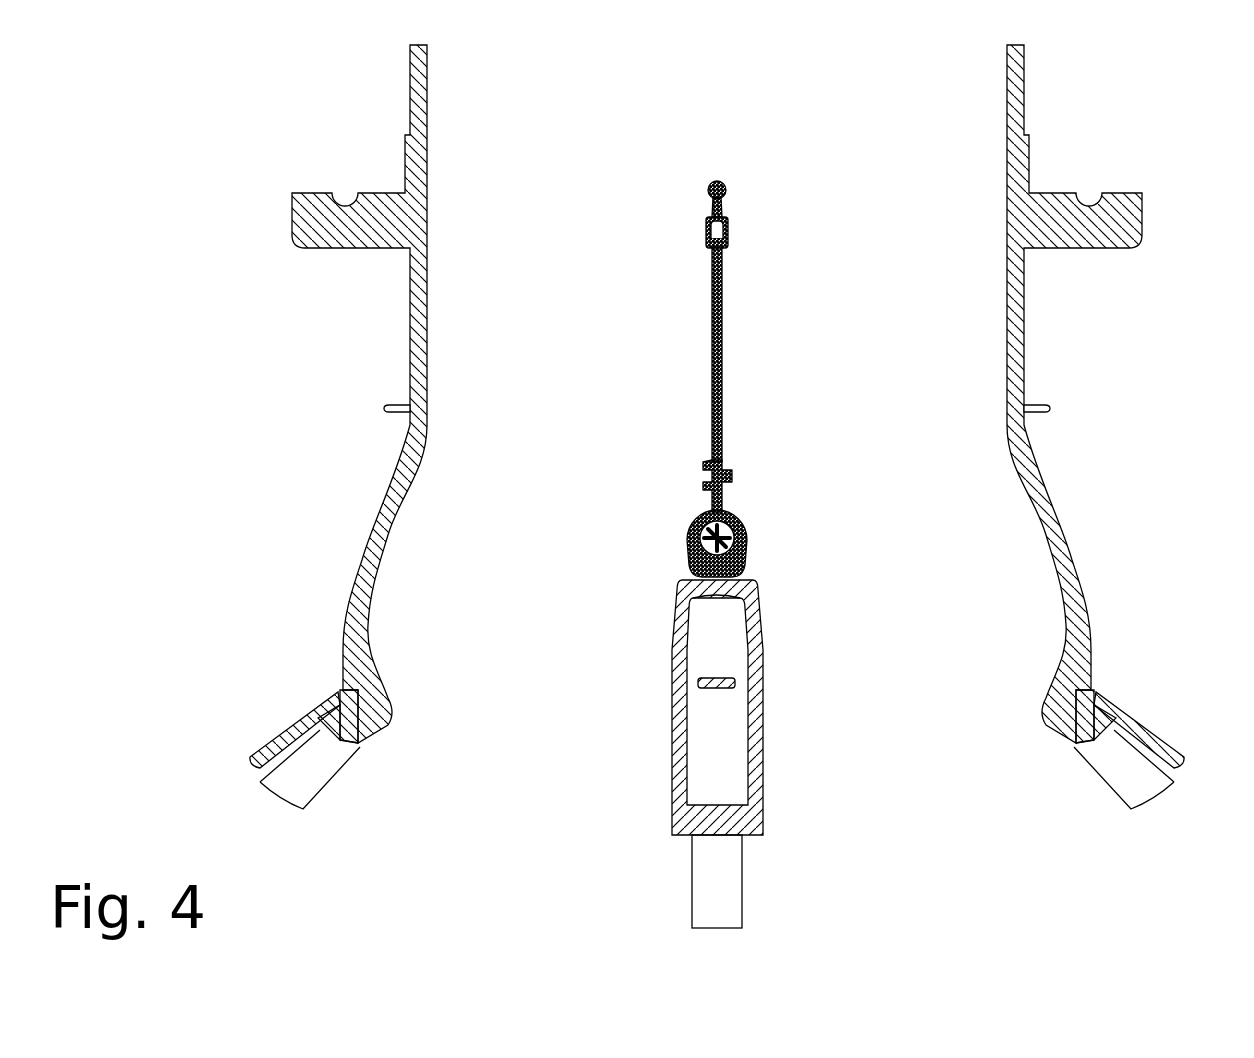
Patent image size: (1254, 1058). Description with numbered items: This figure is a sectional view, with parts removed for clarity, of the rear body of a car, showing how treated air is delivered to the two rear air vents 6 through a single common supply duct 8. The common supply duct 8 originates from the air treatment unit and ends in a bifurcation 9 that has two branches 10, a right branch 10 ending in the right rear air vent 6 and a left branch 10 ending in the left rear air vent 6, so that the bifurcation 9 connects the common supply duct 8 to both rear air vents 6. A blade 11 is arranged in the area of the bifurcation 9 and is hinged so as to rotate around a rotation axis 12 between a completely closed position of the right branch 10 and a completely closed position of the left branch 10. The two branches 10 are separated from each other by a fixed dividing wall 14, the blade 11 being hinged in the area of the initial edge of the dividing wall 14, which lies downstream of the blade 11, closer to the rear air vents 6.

The rear air vent 6 is at (478, 866).
The common supply duct 8 is at (897, 107).
The bifurcation 9 is at (773, 495).
The branch 10 is at (493, 597).
The blade 11 is at (722, 355).
The rotation axis 12 is at (748, 538).
The dividing wall 14 is at (760, 705).